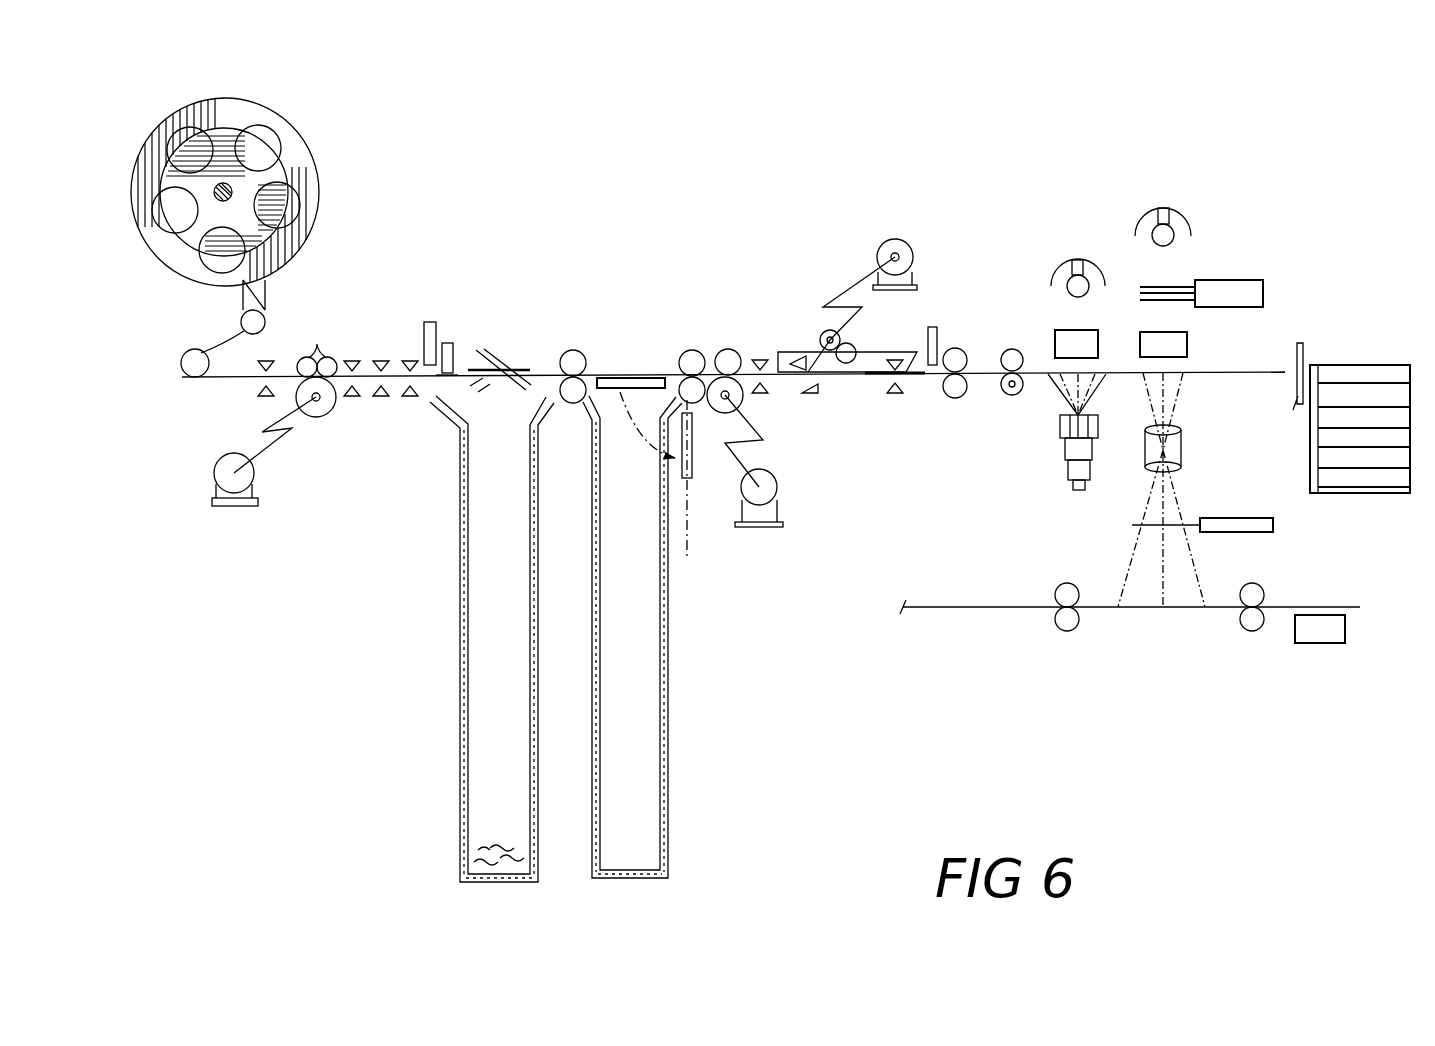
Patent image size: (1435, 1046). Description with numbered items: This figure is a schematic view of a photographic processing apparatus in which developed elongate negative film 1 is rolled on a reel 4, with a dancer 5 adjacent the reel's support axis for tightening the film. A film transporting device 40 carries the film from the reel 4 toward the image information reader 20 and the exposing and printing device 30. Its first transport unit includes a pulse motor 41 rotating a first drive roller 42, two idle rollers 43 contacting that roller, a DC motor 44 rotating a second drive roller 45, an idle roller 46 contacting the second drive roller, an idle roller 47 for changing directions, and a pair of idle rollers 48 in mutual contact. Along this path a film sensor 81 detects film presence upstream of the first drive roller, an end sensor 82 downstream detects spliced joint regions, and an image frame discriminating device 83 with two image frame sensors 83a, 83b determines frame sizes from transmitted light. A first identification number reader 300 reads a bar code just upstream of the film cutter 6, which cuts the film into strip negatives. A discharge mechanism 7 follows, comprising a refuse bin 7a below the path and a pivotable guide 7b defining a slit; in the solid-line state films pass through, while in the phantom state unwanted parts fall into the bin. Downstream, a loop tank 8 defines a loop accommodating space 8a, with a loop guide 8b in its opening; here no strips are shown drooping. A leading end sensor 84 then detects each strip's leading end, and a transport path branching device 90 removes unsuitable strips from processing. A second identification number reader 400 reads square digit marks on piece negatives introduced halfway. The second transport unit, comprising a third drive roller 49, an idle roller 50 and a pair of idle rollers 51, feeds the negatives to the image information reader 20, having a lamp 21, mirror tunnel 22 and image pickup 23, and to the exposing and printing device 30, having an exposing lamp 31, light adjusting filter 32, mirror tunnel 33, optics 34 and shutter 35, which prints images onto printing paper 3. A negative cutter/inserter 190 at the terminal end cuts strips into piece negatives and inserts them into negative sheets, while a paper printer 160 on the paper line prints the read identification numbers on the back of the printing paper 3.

The elongate negative film 1 is at (300, 178).
The printing paper 3 is at (1093, 610).
The reel 4 is at (298, 162).
The dancer 5 is at (266, 297).
The film cutter 6 is at (447, 344).
The discharge mechanism 7 is at (515, 355).
The refuse bin 7a is at (460, 692).
The pivotable guide 7b is at (516, 392).
The loop tank 8 is at (668, 650).
The loop accommodating space 8a is at (632, 785).
The loop guide 8b is at (655, 378).
The image information reader 20 is at (1052, 326).
The lamp 21 is at (1097, 262).
The mirror tunnel 22 is at (1100, 345).
The image pickup 23 is at (1062, 470).
The exposing and printing device 30 is at (1212, 370).
The exposing lamp 31 is at (1190, 222).
The light adjusting filter 32 is at (1211, 280).
The mirror tunnel 33 is at (1187, 350).
The optics 34 is at (1185, 447).
The shutter 35 is at (1218, 520).
The film transporting device 40 is at (441, 298).
The pulse motor 41 is at (242, 508).
The first drive roller 42 is at (313, 417).
The idle rollers 43 is at (317, 349).
The DC motor 44 is at (762, 528).
The second drive roller 45 is at (742, 405).
The idle roller 46 is at (728, 349).
The idle roller 47 is at (187, 372).
The pair of idle rollers 48 is at (690, 350).
The third drive roller 49 is at (1010, 395).
The idle roller 50 is at (1003, 352).
The pair of idle rollers 51 is at (955, 348).
The film sensor 81 is at (248, 403).
The end sensor 82 is at (354, 360).
The image frame discriminating device 83 is at (395, 473).
The image frame sensor 83a is at (381, 398).
The image frame sensor 83b is at (410, 398).
The leading end sensor 84 is at (760, 360).
The transport path branching device 90 is at (848, 285).
The paper printer 160 is at (1310, 632).
The negative cutter/inserter 190 is at (1360, 360).
The first identification number reader 300 is at (428, 322).
The second identification number reader 400 is at (932, 326).